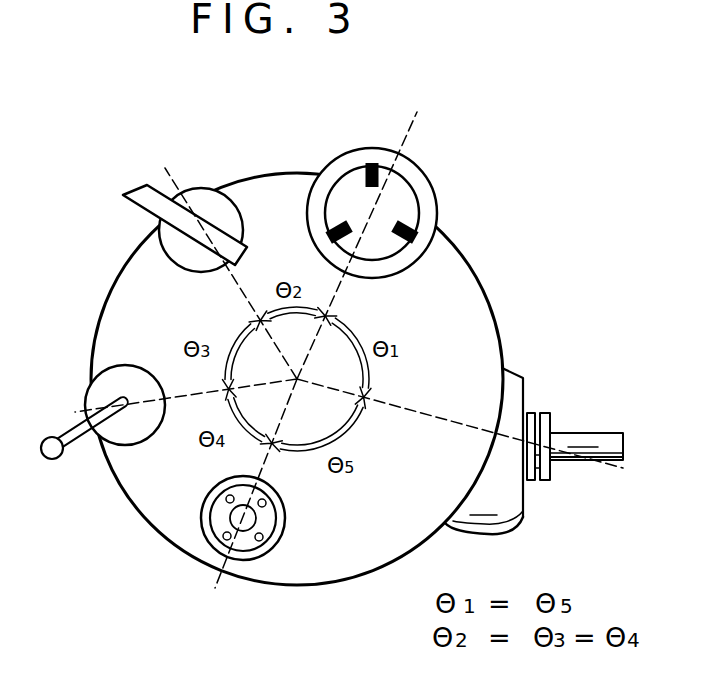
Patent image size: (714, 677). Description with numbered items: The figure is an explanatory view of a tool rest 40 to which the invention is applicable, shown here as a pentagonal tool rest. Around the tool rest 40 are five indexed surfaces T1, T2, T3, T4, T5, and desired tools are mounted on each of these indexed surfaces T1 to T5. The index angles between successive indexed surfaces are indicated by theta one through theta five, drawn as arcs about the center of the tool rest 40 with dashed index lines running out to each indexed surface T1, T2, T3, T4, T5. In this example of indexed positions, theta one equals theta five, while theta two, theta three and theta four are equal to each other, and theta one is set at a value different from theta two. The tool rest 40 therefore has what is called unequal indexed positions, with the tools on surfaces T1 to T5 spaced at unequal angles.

The tool rest 40 is at (470, 294).
The indexed surface T1 is at (460, 451).
The indexed surface T2 is at (376, 245).
The indexed surface T3 is at (210, 256).
The indexed surface T4 is at (162, 412).
The indexed surface T5 is at (249, 503).